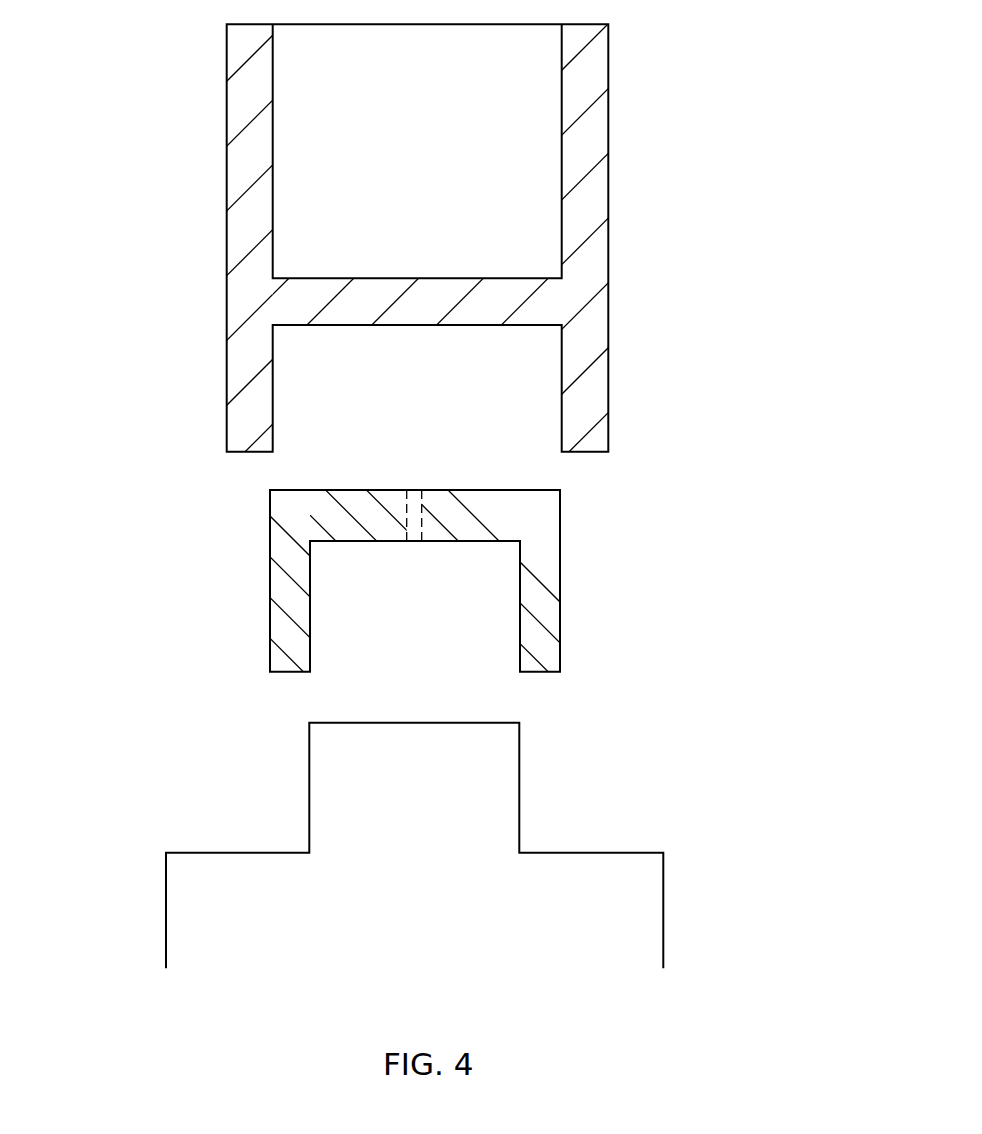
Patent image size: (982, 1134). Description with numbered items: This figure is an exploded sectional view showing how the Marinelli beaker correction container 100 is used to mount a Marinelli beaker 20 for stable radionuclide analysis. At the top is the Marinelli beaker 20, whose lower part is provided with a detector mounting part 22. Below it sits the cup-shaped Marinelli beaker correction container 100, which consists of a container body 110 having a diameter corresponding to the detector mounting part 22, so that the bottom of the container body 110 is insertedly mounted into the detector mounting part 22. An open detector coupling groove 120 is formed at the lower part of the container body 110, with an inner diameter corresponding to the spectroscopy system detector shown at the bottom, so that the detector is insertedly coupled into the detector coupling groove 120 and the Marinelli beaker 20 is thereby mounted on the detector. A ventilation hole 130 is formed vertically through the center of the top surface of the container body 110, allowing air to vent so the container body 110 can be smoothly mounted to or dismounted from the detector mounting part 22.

The Marinelli beaker 20 is at (608, 153).
The detector mounting part 22 is at (562, 393).
The Marinelli beaker correction container 100 is at (557, 602).
The container body 110 is at (282, 628).
The detector coupling groove 120 is at (460, 637).
The ventilation hole 130 is at (407, 518).